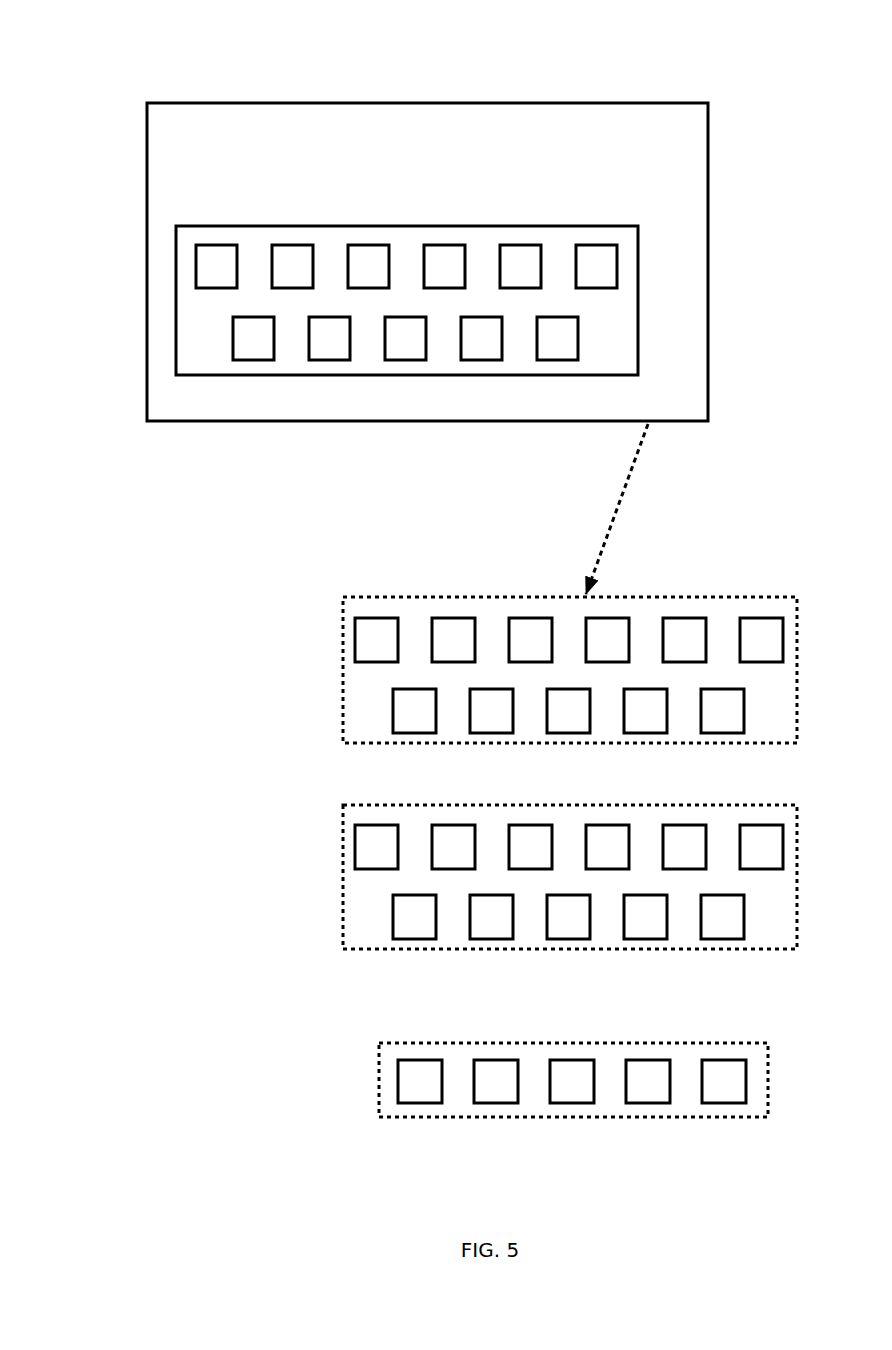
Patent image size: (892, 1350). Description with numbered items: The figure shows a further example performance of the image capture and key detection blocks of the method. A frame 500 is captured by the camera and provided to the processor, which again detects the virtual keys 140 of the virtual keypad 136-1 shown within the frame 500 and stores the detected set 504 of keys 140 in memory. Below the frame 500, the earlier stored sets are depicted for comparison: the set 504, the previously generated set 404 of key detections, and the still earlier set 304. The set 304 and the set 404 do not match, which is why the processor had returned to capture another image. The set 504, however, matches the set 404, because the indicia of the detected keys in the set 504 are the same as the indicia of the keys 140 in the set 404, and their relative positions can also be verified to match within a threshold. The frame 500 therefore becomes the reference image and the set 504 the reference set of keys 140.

The frame 500 is at (304, 96).
The virtual keypad 136-1 is at (343, 249).
The virtual keys 140 is at (190, 266).
The detected set of keys 504 is at (336, 669).
The set of key detections 404 is at (336, 876).
The set of key detections 304 is at (374, 1079).